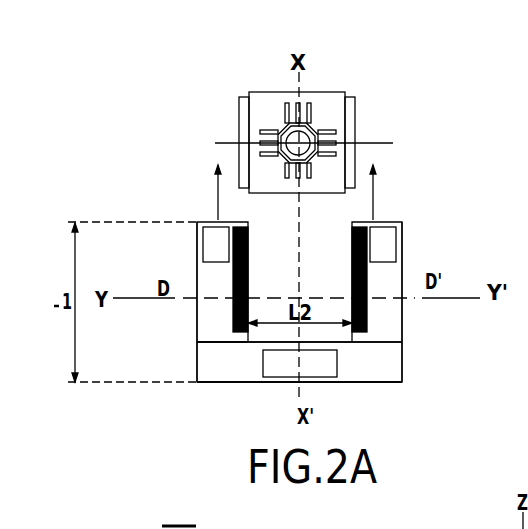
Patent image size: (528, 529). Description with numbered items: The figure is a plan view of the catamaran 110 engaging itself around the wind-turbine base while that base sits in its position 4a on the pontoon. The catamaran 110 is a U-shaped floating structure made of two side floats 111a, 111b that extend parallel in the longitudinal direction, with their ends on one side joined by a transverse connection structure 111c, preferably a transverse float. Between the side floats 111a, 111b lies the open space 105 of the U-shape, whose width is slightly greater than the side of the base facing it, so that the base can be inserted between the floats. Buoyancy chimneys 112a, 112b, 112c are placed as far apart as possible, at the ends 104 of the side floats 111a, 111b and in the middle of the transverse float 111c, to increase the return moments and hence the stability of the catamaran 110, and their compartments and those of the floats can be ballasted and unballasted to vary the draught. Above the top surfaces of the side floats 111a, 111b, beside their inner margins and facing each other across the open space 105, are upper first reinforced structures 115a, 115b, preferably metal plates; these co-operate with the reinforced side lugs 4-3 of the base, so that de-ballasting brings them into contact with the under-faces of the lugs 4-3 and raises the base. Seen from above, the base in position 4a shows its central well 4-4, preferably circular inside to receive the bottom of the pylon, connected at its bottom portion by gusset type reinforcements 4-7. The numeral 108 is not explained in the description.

The position of the base on the pontoon 4a is at (338, 87).
The reinforced side lugs 4-3 is at (239, 113).
The gusset type reinforcements 4-7 is at (287, 118).
The well 4-4 is at (320, 124).
The ends of the side floats 104 is at (203, 221).
The open space of the U-shape 105 is at (272, 280).
The buoyancy chimney 112a is at (213, 242).
The buoyancy chimney 112b is at (387, 233).
The buoyancy chimney 112c is at (275, 372).
The upper first reinforced structure 115a is at (249, 250).
The upper first reinforced structure 115b is at (350, 290).
The side float 111a is at (197, 323).
The side float 111b is at (393, 320).
The transverse connection structure 111c is at (369, 378).
The bottom surface of recess 108 is at (223, 343).
The catamaran 110 is at (196, 391).